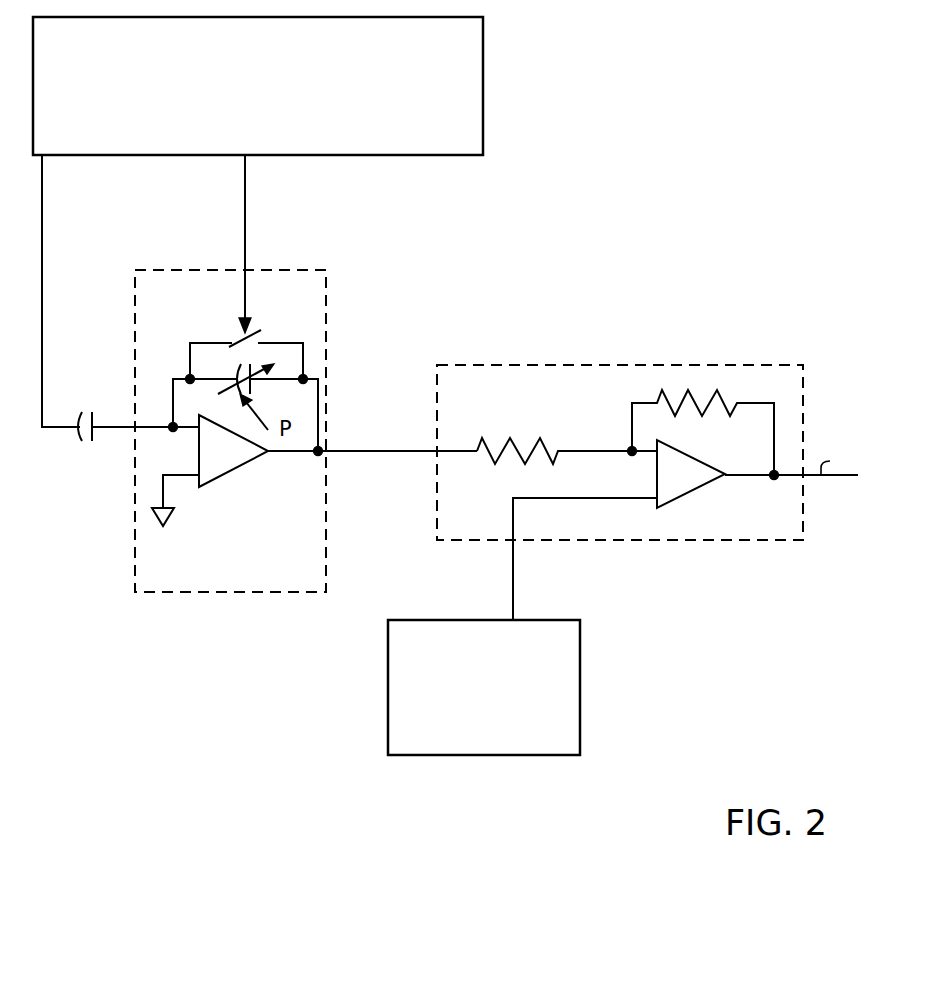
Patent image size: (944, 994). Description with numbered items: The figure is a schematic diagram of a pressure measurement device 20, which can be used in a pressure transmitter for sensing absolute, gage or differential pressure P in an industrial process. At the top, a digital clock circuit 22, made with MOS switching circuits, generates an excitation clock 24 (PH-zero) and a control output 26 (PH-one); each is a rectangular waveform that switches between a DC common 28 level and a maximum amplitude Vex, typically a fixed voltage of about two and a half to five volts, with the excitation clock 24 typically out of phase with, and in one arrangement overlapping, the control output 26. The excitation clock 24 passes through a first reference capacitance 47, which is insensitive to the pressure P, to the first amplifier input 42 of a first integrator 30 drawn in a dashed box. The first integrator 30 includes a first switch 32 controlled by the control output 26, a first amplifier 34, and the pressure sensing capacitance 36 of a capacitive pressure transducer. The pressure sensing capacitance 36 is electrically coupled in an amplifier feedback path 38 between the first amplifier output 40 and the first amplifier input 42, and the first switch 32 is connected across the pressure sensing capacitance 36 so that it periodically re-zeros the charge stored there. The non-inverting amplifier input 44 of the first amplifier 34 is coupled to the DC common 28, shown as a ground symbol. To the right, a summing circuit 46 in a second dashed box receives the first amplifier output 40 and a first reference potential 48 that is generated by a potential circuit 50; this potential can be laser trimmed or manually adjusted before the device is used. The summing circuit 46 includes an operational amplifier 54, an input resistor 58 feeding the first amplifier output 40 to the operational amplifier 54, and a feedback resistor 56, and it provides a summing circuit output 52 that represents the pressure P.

The pressure measurement device 20 is at (684, 56).
The digital clock circuit 22 is at (483, 122).
The excitation clock 24 is at (43, 157).
The control output 26 is at (246, 157).
The DC common 28 is at (156, 523).
The first integrator 30 is at (200, 593).
The first switch 32 is at (243, 331).
The first amplifier 34 is at (227, 472).
The pressure sensing capacitance 36 is at (248, 372).
The amplifier feedback path 38 is at (318, 405).
The first amplifier output 40 is at (272, 455).
The first amplifier input 42 is at (195, 428).
The non-inverting amplifier input 44 is at (193, 476).
The summing circuit 46 is at (527, 366).
The first reference capacitance 47 is at (80, 411).
The first reference potential 48 is at (514, 545).
The potential circuit 50 is at (580, 683).
The summing circuit output 52 is at (820, 477).
The operational amplifier 54 is at (690, 493).
The feedback resistor 56 is at (685, 400).
The input resistor 58 is at (541, 445).